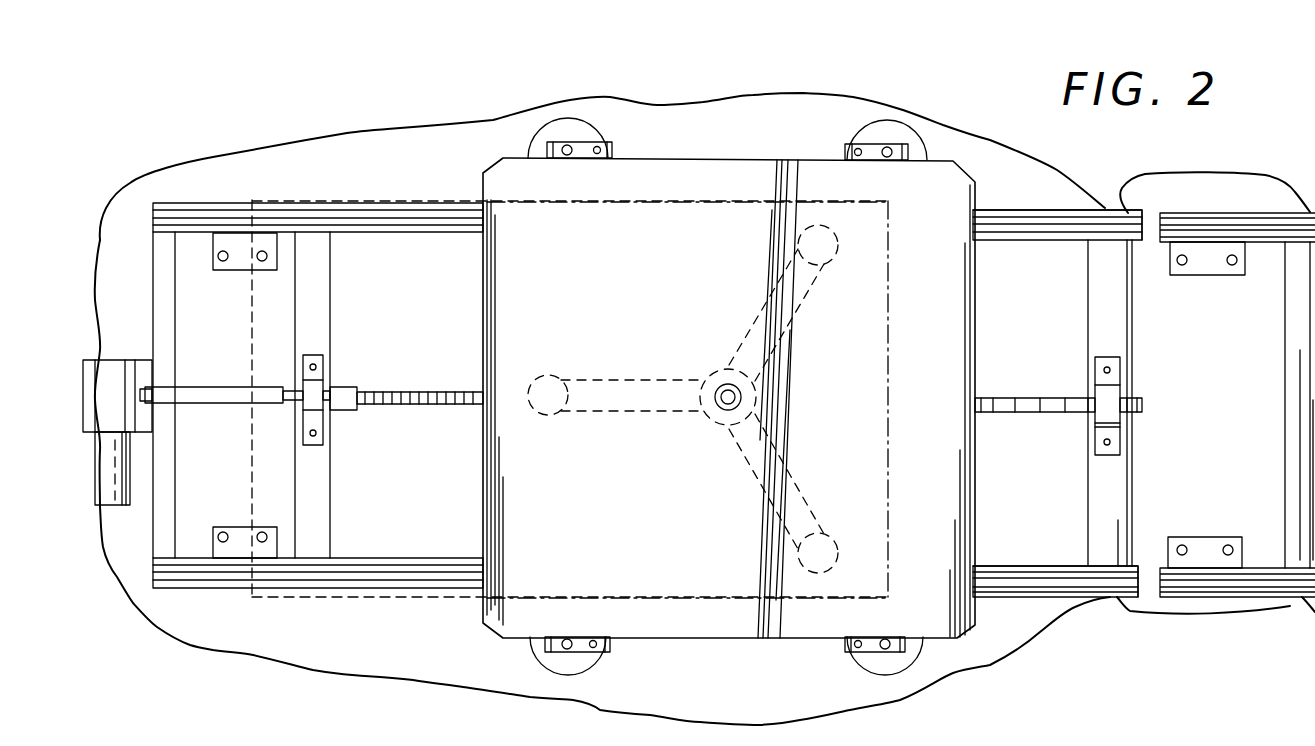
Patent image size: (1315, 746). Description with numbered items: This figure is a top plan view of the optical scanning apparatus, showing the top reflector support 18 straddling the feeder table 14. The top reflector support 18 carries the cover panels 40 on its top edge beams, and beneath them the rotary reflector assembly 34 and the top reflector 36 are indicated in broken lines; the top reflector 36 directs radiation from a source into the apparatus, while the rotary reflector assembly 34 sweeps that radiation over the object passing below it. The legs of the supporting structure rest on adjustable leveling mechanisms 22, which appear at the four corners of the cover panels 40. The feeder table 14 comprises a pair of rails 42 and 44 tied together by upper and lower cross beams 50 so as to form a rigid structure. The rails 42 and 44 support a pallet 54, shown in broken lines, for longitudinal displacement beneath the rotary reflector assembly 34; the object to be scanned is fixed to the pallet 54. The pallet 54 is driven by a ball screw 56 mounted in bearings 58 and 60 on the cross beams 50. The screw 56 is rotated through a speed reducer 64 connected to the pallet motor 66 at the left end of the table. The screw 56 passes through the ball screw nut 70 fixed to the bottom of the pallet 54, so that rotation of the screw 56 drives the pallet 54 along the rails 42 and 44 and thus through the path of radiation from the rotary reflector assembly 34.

The feeder table 14 is at (420, 188).
The top reflector support 18 is at (698, 145).
The adjustable leveling mechanisms 22 is at (575, 122).
The rotary reflector assembly 34 is at (608, 372).
The top reflector 36 is at (728, 384).
The cover panels 40 is at (609, 557).
The rail 42 is at (1015, 237).
The rail 44 is at (1037, 564).
The cross beams 50 is at (316, 285).
The pallet 54 is at (335, 200).
The ball screw 56 is at (453, 392).
The bearing 58 is at (318, 386).
The bearing 60 is at (1100, 408).
The speed reducer 64 is at (115, 377).
The pallet motor 66 is at (117, 495).
The ball screw nut 70 is at (347, 403).